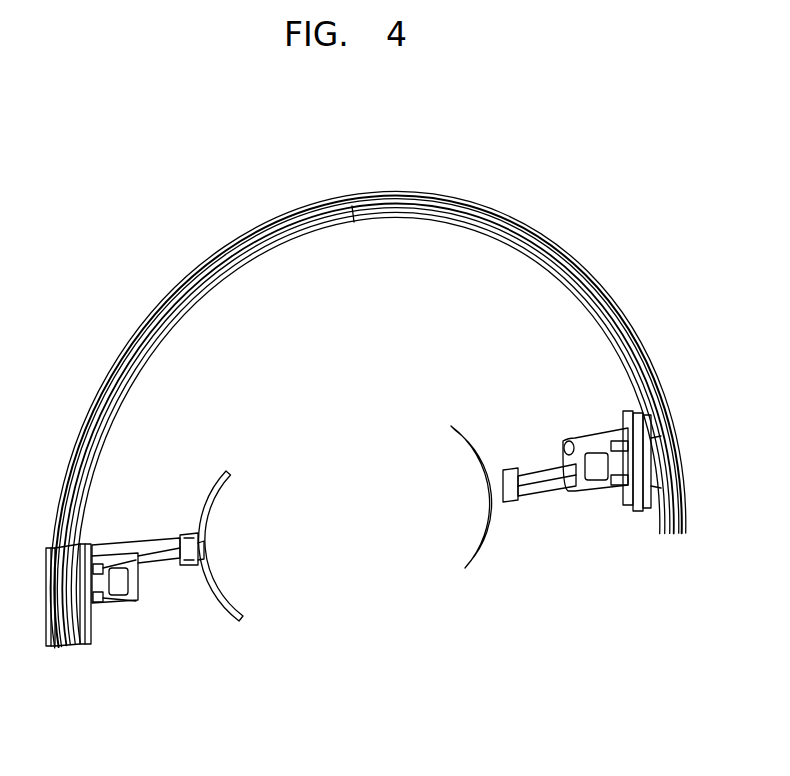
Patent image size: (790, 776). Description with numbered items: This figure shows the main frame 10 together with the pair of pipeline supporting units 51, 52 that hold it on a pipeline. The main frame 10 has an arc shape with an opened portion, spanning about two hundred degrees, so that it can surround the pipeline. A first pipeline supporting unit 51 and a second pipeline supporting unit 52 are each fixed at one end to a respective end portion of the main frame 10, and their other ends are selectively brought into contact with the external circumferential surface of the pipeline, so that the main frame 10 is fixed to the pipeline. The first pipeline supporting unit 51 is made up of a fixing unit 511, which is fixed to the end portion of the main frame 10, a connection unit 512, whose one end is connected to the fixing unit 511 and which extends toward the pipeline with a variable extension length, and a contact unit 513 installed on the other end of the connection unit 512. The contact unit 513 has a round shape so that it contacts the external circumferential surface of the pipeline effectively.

The main frame 10 is at (478, 206).
The first pipeline supporting unit 51 is at (144, 558).
The fixing unit 511 is at (88, 634).
The connection unit 512 is at (136, 532).
The contact unit 513 is at (214, 463).
The second pipeline supporting unit 52 is at (577, 503).